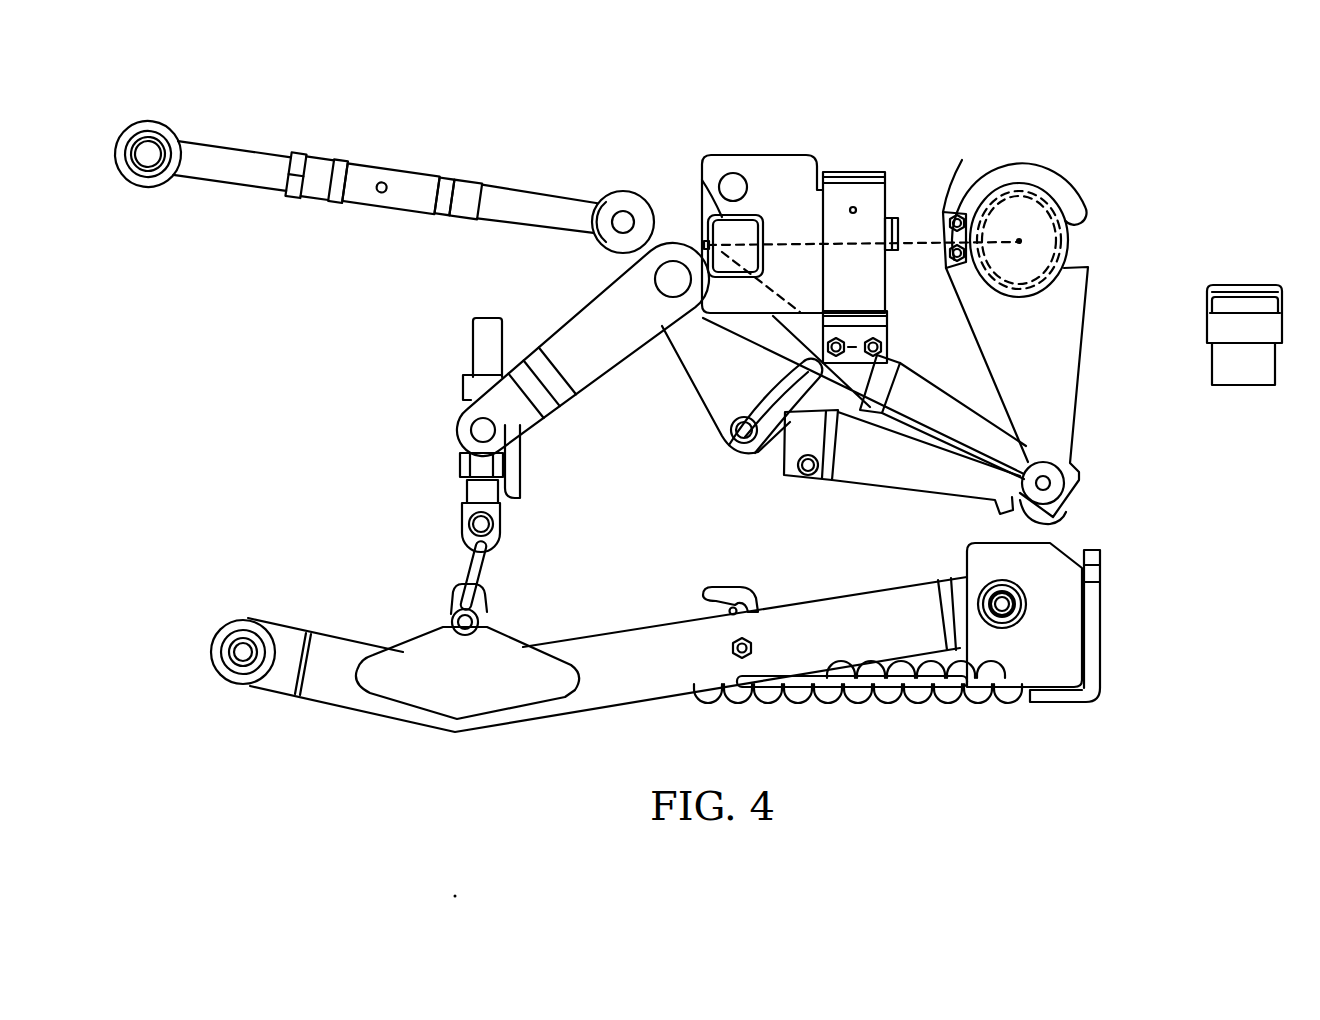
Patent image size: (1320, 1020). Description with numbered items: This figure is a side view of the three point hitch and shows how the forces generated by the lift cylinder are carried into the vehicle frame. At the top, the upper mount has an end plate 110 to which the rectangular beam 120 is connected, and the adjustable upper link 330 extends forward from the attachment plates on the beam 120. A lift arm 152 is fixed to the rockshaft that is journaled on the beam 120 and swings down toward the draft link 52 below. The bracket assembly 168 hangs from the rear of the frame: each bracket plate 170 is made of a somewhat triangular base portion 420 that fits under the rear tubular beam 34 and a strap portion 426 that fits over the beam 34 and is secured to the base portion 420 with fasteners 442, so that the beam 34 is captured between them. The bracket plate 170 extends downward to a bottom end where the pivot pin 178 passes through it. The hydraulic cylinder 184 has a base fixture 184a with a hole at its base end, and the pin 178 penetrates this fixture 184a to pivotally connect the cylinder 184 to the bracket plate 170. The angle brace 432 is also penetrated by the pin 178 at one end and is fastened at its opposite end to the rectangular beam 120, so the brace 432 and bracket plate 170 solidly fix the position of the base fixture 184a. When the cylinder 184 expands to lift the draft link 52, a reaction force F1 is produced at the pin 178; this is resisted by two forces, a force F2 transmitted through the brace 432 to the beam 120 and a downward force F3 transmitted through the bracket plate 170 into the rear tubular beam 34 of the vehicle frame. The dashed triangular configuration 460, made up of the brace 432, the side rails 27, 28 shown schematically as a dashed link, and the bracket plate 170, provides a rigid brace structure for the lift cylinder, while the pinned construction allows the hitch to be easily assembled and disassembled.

The upper link 330 is at (208, 138).
The rectangular beam 120 is at (700, 184).
The lift arm 152 is at (600, 388).
The end plate 110 is at (772, 183).
The side rail 27 is at (857, 238).
The side rail 28 is at (813, 242).
The triangular configuration 460 is at (916, 226).
The fasteners 442 is at (950, 211).
The bracket assembly 168 is at (1053, 199).
The strap portion 426 is at (1086, 192).
The rear tubular beam 34 is at (1070, 241).
The bracket plate 170 is at (1065, 384).
The triangular base portion 420 is at (1088, 312).
The angle brace 432 is at (944, 392).
The hydraulic cylinder 184 is at (882, 488).
The base fixture 184a is at (1062, 521).
The pivot pin 178 is at (1074, 468).
The reaction force F1 is at (1010, 479).
The force F2 is at (900, 378).
The force F3 is at (1019, 242).
The draft link 52 is at (607, 626).